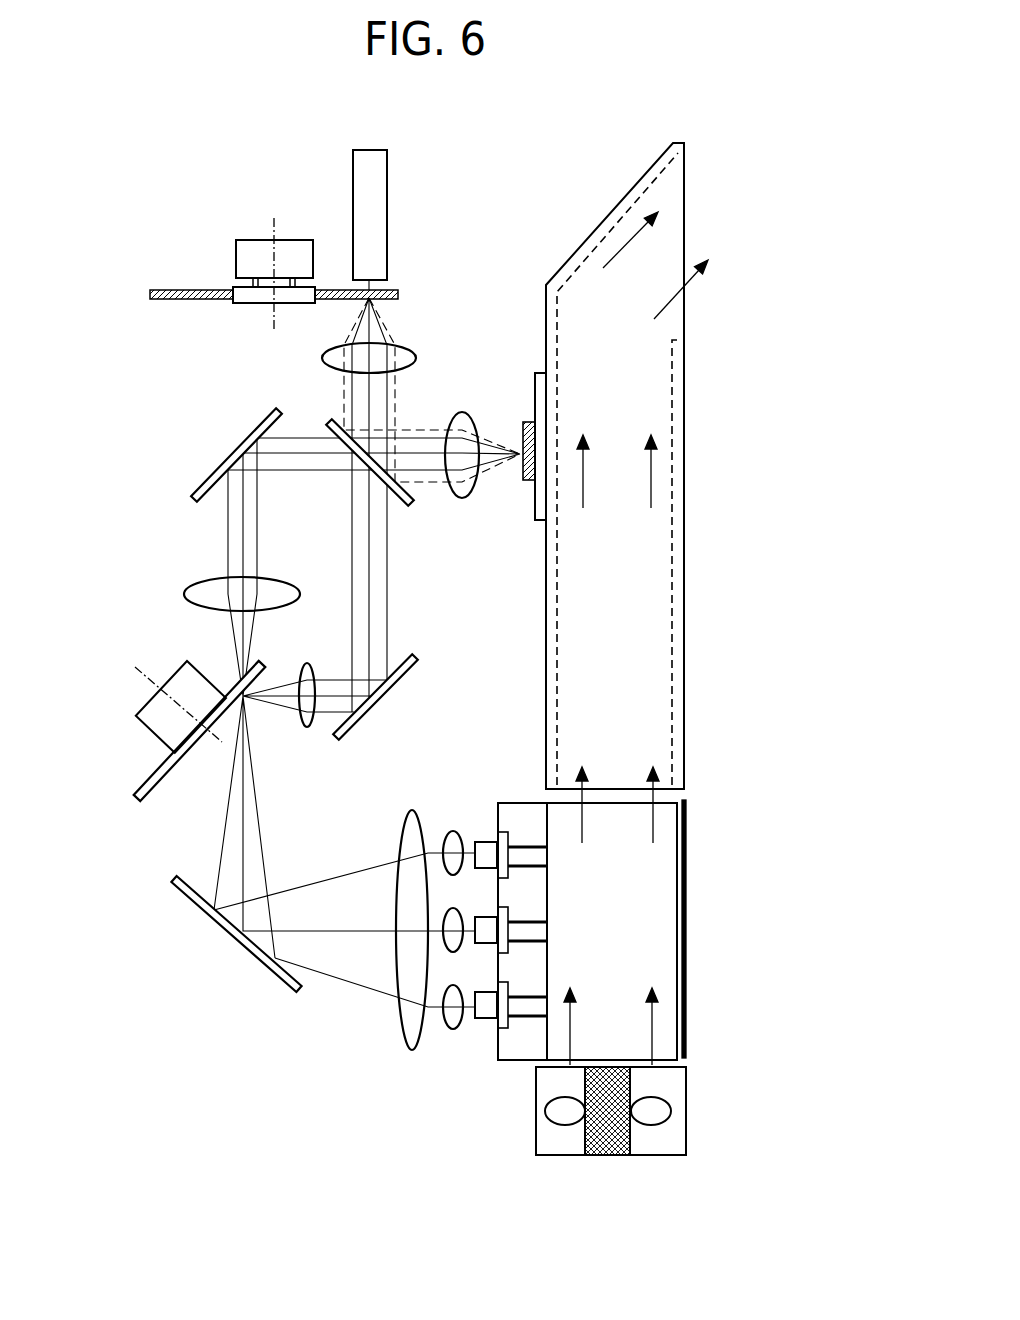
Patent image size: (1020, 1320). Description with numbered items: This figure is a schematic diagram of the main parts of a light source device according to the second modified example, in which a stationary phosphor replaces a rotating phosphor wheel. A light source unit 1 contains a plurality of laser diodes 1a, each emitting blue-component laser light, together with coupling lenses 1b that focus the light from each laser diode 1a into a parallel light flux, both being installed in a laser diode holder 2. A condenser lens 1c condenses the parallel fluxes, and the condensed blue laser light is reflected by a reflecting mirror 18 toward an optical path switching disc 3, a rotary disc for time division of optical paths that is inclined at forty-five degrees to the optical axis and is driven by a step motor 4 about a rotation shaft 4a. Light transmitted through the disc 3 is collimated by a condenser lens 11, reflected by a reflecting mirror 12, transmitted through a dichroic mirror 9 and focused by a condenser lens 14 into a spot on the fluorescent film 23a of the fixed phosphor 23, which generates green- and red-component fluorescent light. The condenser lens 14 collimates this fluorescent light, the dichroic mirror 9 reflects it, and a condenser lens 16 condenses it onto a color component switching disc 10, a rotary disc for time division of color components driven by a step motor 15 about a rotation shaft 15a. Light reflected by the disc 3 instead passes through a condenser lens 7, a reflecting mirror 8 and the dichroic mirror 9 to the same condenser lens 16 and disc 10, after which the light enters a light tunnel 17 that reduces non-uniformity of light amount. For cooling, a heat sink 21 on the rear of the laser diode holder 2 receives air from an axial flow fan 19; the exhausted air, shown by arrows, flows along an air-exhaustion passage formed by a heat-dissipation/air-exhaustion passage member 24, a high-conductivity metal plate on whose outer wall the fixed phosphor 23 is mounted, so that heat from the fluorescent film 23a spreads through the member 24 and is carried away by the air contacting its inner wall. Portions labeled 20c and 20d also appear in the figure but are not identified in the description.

The light source unit 1 is at (497, 1072).
The laser diode 1a is at (497, 832).
The coupling lens 1b is at (450, 830).
The condenser lens 1c is at (396, 950).
The laser diode holder 2 is at (523, 1050).
The optical path switching disc 3 is at (135, 777).
The step motor 4 is at (150, 697).
The rotation shaft 4a is at (218, 745).
The condenser lens 7 is at (307, 728).
The reflecting mirror 8 is at (417, 663).
The dichroic mirror 9 is at (413, 506).
The color component switching disc 10 is at (173, 290).
The condenser lens 11 is at (196, 585).
The reflecting mirror 12 is at (212, 470).
The condenser lens 14 is at (456, 414).
The step motor 15 is at (253, 247).
The rotation shaft 15a is at (268, 318).
The condenser lens 16 is at (324, 358).
The light tunnel 17 is at (387, 183).
The reflecting mirror 18 is at (232, 943).
The axial flow fan 19 is at (627, 1155).
The inclined portion of light guide 20c is at (607, 218).
The reflecting sheet 20d is at (686, 998).
The heat sink 21 is at (660, 937).
The fixed phosphor 23 is at (518, 398).
The fluorescent film 23a is at (531, 480).
The heat-dissipation/air-exhaustion passage member 24 is at (680, 536).